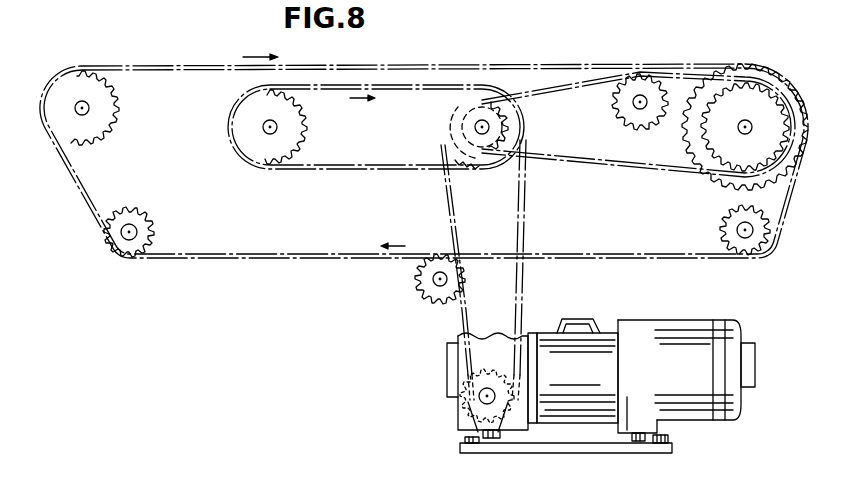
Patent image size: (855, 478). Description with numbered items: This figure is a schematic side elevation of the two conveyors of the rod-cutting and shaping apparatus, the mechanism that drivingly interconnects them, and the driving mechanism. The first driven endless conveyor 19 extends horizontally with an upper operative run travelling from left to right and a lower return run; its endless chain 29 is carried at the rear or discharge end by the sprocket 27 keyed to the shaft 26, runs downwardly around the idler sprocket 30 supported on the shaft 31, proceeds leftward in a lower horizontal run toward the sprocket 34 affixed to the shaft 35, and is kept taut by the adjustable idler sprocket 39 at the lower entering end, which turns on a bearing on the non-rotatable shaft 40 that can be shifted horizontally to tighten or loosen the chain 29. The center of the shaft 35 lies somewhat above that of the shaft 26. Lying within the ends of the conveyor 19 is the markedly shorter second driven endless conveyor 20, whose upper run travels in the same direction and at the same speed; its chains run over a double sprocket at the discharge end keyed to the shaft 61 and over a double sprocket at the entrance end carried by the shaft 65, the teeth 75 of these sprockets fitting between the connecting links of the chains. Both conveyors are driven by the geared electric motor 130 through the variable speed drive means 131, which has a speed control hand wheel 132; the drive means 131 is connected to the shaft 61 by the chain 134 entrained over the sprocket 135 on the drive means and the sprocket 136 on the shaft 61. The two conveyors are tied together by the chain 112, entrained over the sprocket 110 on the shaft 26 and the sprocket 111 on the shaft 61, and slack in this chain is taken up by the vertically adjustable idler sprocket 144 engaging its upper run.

The first driven endless conveyor 19 is at (163, 66).
The second driven endless conveyor 20 is at (316, 178).
The shaft 26 is at (745, 127).
The sprocket 27 is at (687, 147).
The endless chain 29 is at (84, 193).
The idler sprocket 30 is at (722, 243).
The shaft 31 is at (744, 230).
The sprocket 34 is at (97, 146).
The shaft 35 is at (90, 110).
The adjustable idler sprocket 39 is at (150, 215).
The non-rotatable shaft 40 is at (137, 232).
The shaft 61 is at (476, 127).
The shaft 65 is at (267, 128).
The teeth 75 is at (455, 161).
The sprocket 110 is at (735, 150).
The sprocket 111 is at (479, 170).
The chain 112 is at (557, 84).
The geared electric motor 130 is at (635, 328).
The variable speed drive means 131 is at (541, 333).
The speed control hand wheel 132 is at (579, 320).
The chain 134 is at (527, 212).
The sprocket 135 is at (460, 408).
The sprocket 136 is at (502, 130).
The idler sprocket 144 is at (612, 103).